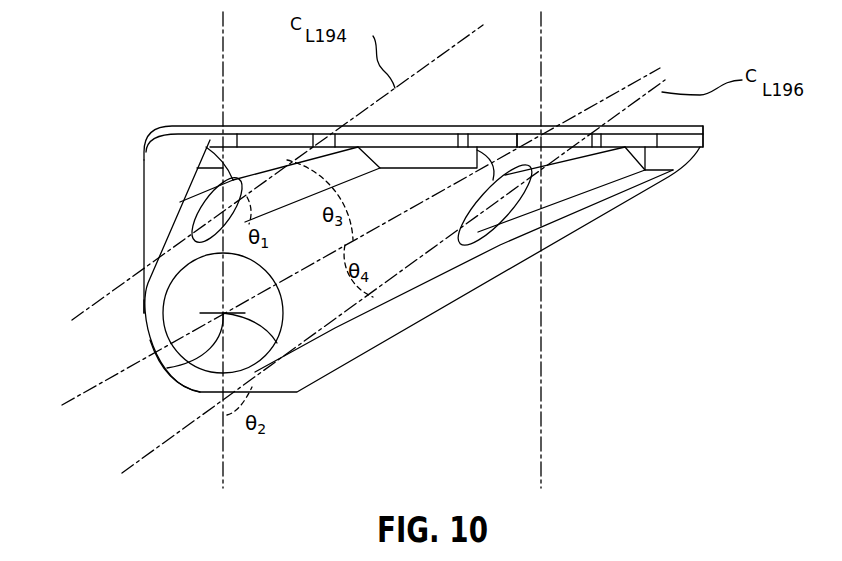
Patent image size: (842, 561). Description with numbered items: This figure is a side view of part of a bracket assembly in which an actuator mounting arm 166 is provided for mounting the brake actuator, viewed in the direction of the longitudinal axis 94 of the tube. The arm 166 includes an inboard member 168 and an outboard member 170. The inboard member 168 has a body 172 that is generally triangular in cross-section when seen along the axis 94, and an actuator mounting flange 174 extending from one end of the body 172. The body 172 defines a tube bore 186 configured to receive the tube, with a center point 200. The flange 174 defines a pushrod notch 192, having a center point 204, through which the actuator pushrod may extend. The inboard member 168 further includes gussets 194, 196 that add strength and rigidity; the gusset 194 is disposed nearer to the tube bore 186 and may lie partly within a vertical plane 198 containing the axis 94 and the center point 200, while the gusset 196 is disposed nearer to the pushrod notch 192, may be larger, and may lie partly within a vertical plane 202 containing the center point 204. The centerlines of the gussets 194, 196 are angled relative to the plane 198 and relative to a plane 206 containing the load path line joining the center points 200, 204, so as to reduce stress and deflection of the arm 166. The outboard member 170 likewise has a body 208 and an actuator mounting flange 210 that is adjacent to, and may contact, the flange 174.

The longitudinal axis 94 is at (165, 365).
The actuator mounting arm 166 is at (158, 78).
The inboard member 168 is at (378, 318).
The outboard member 170 is at (160, 156).
The body 172 is at (315, 358).
The actuator mounting flange 174 is at (703, 145).
The tube bore 186 is at (163, 312).
The pushrod notch 192 is at (492, 126).
The gusset 194 is at (190, 210).
The gusset 196 is at (552, 183).
The vertical plane 198 is at (222, 28).
The center point 200 is at (277, 350).
The vertical plane 202 is at (543, 433).
The center point 204 is at (516, 140).
The plane 206 is at (612, 96).
The body 208 is at (160, 192).
The actuator mounting flange 210 is at (703, 128).